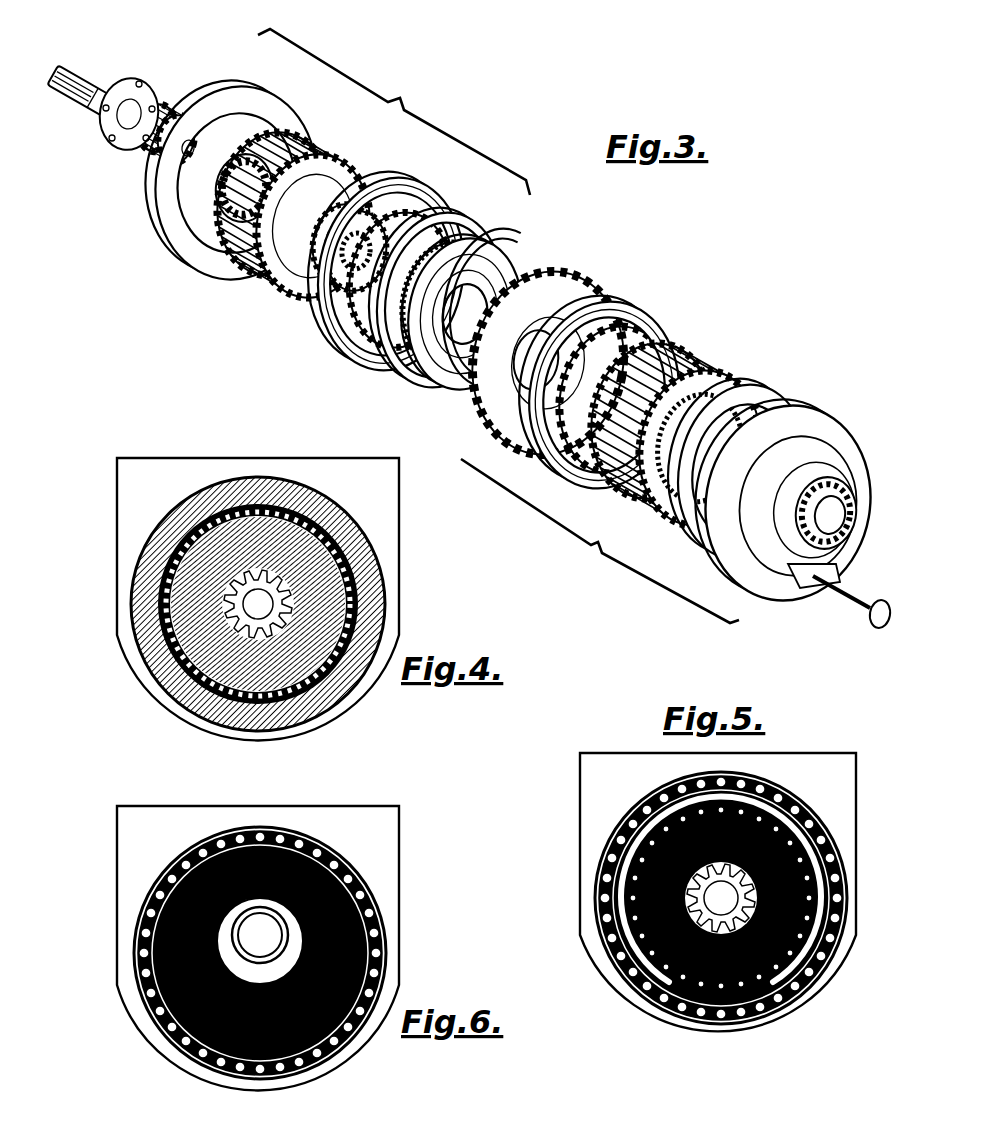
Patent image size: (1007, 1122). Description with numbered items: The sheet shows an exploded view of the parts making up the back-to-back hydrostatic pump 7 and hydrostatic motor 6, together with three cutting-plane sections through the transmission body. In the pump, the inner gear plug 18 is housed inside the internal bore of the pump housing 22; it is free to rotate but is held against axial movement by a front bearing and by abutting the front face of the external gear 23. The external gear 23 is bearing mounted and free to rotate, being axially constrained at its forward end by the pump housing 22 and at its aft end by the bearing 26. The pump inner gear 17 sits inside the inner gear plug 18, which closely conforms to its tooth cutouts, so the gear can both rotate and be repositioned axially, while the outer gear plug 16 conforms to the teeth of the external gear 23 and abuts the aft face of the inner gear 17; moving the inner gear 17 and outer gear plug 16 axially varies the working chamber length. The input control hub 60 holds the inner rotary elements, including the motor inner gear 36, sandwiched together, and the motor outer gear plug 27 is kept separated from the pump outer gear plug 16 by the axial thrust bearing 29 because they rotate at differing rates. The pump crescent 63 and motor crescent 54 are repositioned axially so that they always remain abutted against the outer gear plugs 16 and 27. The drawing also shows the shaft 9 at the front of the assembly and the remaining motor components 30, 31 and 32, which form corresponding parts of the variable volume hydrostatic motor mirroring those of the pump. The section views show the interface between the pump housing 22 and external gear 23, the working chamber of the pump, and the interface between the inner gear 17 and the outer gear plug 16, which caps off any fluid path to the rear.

The hydrostatic motor 6 is at (600, 541).
The hydrostatic pump 7 is at (394, 112).
The input shaft 9 is at (72, 92).
The pump outer gear plug 16 is at (432, 373).
The pump inner gear 17 is at (292, 277).
The inner gear plug 18 is at (247, 253).
The pump housing 22 is at (143, 207).
The external gear 23 is at (320, 335).
The bearing 26 is at (382, 367).
The motor outer gear plug 27 is at (563, 275).
The axial thrust bearing 29 is at (513, 268).
The ring gear 30 is at (613, 293).
The housing 31 is at (793, 397).
The end ring 32 is at (740, 377).
The motor inner gear 36 is at (677, 340).
The motor crescent 54 is at (838, 580).
The input control hub 60 is at (110, 143).
The pump crescent 63 is at (227, 243).